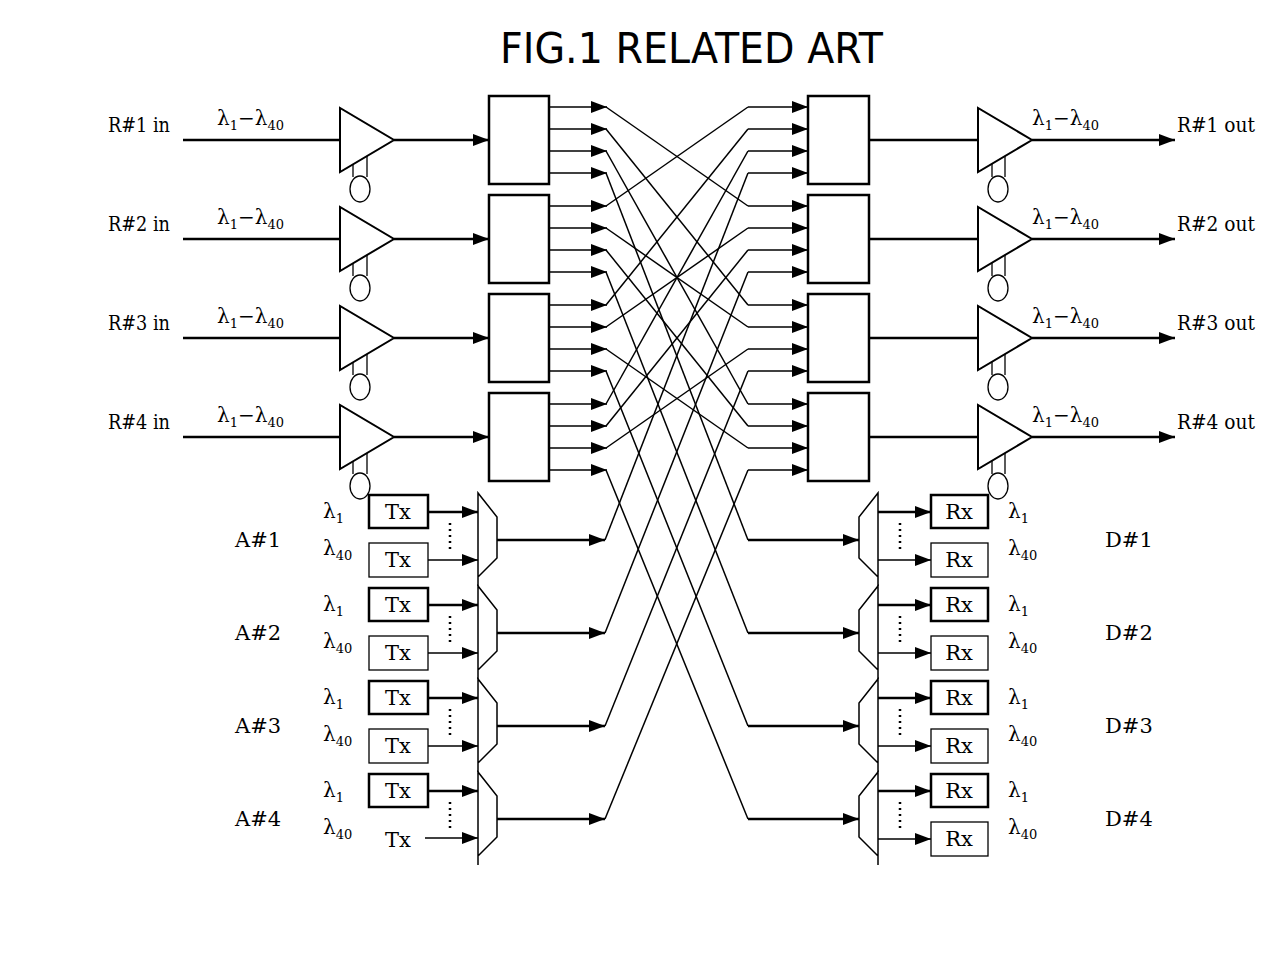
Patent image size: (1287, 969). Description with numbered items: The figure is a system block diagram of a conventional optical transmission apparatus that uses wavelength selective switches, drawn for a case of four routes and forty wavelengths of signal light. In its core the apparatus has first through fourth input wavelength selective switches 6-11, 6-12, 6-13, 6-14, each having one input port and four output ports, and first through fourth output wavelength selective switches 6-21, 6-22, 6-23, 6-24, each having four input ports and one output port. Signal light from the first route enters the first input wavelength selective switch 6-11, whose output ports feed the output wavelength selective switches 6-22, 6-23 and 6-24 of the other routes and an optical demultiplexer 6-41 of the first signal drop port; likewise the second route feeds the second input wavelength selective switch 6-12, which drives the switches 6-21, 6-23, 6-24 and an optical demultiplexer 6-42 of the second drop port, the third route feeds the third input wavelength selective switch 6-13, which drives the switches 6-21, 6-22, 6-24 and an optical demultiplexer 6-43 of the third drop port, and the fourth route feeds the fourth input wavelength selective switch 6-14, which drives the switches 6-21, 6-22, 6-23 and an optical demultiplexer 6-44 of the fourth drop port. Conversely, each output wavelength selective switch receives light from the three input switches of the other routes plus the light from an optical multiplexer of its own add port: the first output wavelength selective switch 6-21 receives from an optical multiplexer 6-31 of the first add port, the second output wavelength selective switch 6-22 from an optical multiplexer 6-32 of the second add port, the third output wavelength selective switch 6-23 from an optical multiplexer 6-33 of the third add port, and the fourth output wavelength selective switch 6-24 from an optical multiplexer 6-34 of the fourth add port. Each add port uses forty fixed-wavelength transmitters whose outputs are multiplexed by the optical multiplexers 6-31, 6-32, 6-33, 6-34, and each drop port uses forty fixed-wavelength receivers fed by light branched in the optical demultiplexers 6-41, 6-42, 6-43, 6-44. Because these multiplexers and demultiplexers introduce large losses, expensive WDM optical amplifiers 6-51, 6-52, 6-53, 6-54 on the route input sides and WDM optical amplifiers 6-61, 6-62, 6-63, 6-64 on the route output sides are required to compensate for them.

The first input wavelength selective switch 6-11 is at (489, 113).
The second input wavelength selective switch 6-12 is at (489, 212).
The third input wavelength selective switch 6-13 is at (489, 311).
The fourth input wavelength selective switch 6-14 is at (489, 410).
The first output wavelength selective switch 6-21 is at (869, 113).
The second output wavelength selective switch 6-22 is at (869, 212).
The third output wavelength selective switch 6-23 is at (869, 311).
The fourth output wavelength selective switch 6-24 is at (869, 410).
The optical multiplexer 6-31 is at (490, 507).
The optical multiplexer 6-32 is at (490, 600).
The optical multiplexer 6-33 is at (490, 693).
The optical multiplexer 6-34 is at (490, 786).
The optical demultiplexer 6-41 is at (866, 507).
The optical demultiplexer 6-42 is at (866, 600).
The optical demultiplexer 6-43 is at (866, 693).
The optical demultiplexer 6-44 is at (866, 786).
The WDM optical amplifier 6-51 is at (340, 162).
The WDM optical amplifier 6-52 is at (340, 261).
The WDM optical amplifier 6-53 is at (340, 360).
The WDM optical amplifier 6-54 is at (340, 459).
The WDM optical amplifier 6-61 is at (1017, 157).
The WDM optical amplifier 6-62 is at (1017, 256).
The WDM optical amplifier 6-63 is at (1017, 355).
The WDM optical amplifier 6-64 is at (1017, 454).